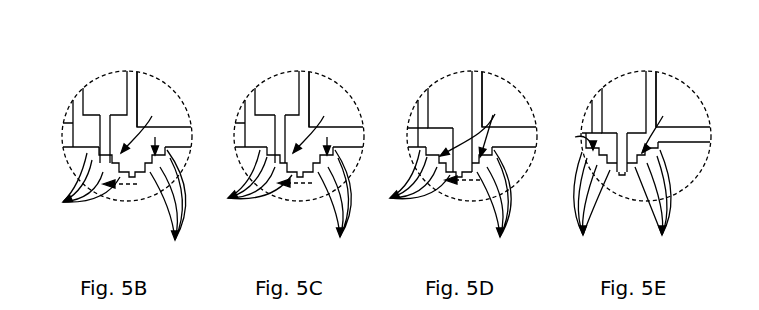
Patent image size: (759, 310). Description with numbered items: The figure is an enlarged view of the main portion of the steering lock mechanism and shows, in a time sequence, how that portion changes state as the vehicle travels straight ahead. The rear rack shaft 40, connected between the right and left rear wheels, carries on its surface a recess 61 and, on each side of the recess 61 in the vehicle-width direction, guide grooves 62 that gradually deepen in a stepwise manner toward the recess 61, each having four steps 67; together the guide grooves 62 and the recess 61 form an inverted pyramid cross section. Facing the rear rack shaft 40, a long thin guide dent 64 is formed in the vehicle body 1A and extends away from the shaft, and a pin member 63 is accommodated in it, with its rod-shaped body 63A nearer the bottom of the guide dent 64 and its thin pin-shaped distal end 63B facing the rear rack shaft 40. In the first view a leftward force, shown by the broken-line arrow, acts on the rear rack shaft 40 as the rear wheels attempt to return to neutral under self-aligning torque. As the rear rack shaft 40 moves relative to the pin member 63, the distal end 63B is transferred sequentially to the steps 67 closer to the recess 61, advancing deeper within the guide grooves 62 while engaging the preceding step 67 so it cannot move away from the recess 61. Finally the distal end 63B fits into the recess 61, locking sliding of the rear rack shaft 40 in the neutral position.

In FIG. 5B, the vehicle body 1A is at (192, 124).
In FIG. 5C, the vehicle body 1A is at (320, 121).
In FIG. 5D, the vehicle body 1A is at (474, 94).
In FIG. 5E, the vehicle body 1A is at (651, 98).
In FIG. 5B, the rear rack shaft 40 is at (108, 196).
In FIG. 5C, the rear rack shaft 40 is at (299, 161).
In FIG. 5D, the rear rack shaft 40 is at (471, 160).
In FIG. 5E, the rear rack shaft 40 is at (651, 148).
In FIG. 5B, the recess 61 is at (135, 188).
In FIG. 5C, the recess 61 is at (300, 193).
In FIG. 5D, the recess 61 is at (459, 194).
In FIG. 5E, the recess 61 is at (622, 186).
In FIG. 5B, the guide grooves 62 is at (164, 71).
In FIG. 5C, the guide grooves 62 is at (318, 123).
In FIG. 5D, the guide grooves 62 is at (478, 123).
In FIG. 5E, the guide grooves 62 is at (615, 142).
In FIG. 5B, the pin member 63 is at (133, 43).
In FIG. 5C, the pin member 63 is at (253, 84).
In FIG. 5D, the pin member 63 is at (421, 88).
In FIG. 5E, the pin member 63 is at (596, 87).
In FIG. 5B, the body 63A is at (101, 98).
In FIG. 5C, the body 63A is at (280, 77).
In FIG. 5D, the body 63A is at (447, 83).
In FIG. 5E, the body 63A is at (622, 86).
In FIG. 5B, the distal end 63B is at (101, 138).
In FIG. 5C, the distal end 63B is at (242, 101).
In FIG. 5D, the distal end 63B is at (420, 105).
In FIG. 5E, the distal end 63B is at (585, 105).
In FIG. 5B, the guide dent 64 is at (133, 91).
In FIG. 5C, the guide dent 64 is at (323, 68).
In FIG. 5D, the guide dent 64 is at (495, 65).
In FIG. 5E, the guide dent 64 is at (669, 65).
In FIG. 5B, the steps 67 is at (113, 206).
In FIG. 5C, the steps 67 is at (278, 206).
In FIG. 5D, the steps 67 is at (439, 206).
In FIG. 5E, the steps 67 is at (625, 206).